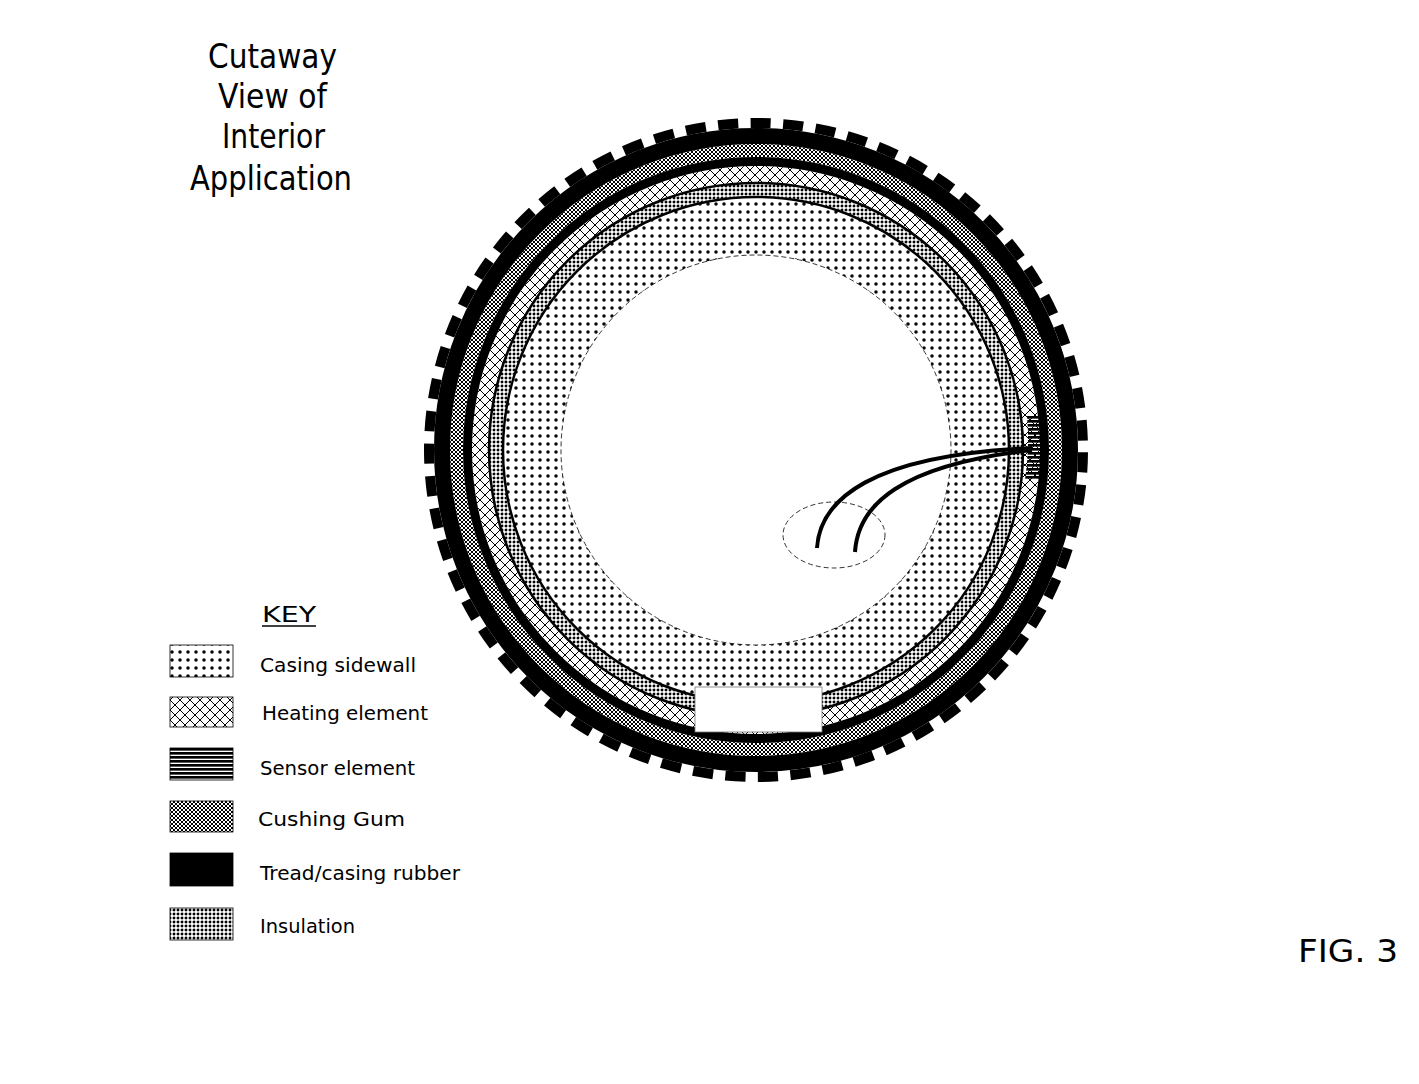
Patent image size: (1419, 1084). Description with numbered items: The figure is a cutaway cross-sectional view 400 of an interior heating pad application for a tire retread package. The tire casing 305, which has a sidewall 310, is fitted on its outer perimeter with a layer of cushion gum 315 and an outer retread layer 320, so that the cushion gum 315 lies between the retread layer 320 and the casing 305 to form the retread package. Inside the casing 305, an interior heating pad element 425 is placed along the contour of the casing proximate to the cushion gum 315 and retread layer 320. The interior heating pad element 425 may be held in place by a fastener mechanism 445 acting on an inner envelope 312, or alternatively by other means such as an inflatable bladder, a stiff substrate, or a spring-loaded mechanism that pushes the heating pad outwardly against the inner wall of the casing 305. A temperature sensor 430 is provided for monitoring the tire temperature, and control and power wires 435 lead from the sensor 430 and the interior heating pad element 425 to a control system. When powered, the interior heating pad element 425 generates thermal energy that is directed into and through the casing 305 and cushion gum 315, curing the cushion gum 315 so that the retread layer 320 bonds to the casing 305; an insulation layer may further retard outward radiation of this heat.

The cross-sectional view 400 is at (485, 104).
The retread layer 320 is at (940, 178).
The cushion gum 315 is at (1055, 316).
The inner envelope 312 is at (1012, 523).
The sidewall 310 is at (955, 592).
The tire casing 305 is at (727, 185).
The interior heating pad element 425 is at (915, 733).
The sensor 430 is at (1032, 408).
The control and power wires 435 is at (836, 568).
The fastener mechanism 445 is at (757, 687).